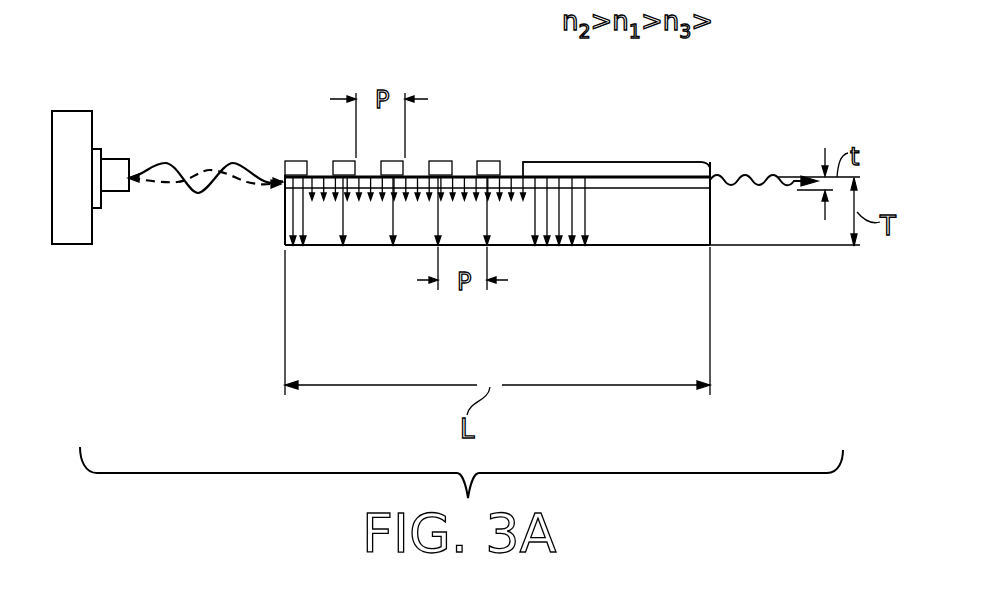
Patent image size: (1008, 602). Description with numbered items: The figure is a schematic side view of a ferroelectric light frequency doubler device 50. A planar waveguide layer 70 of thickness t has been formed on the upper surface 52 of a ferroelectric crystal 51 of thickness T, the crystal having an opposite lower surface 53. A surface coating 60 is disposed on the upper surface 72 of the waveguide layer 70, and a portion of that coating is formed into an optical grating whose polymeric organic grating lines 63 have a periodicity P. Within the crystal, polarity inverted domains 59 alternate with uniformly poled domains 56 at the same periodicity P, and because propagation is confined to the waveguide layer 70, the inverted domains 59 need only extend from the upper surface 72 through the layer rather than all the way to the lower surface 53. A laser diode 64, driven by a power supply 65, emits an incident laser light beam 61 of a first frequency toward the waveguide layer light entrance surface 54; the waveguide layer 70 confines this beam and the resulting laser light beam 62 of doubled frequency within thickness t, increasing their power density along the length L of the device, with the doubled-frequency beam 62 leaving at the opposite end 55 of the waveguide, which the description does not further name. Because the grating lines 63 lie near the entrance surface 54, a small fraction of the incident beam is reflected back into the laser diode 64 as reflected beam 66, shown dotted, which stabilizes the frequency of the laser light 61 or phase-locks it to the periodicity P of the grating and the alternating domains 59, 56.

The ferroelectric light frequency doubler device 50 is at (369, 71).
The crystal 51 is at (285, 247).
The surface of crystal 52 is at (640, 190).
The lower surface of crystal 53 is at (657, 244).
The waveguide layer light entrance surface 54 is at (283, 193).
The output end 55 is at (710, 162).
The uniformly poled domains 56 is at (347, 230).
The polarity inverted domains 59 is at (423, 196).
The surface coating 60 is at (580, 168).
The incident laser light beam 61 is at (197, 193).
The laser light beam of second frequency 62 is at (779, 178).
The grating lines 63 is at (347, 160).
The laser diode 64 is at (117, 158).
The power supply 65 is at (78, 113).
The reflected beam 66 is at (208, 170).
The planar waveguide layer 70 is at (618, 175).
The upper surface of waveguide layer 72 is at (503, 177).